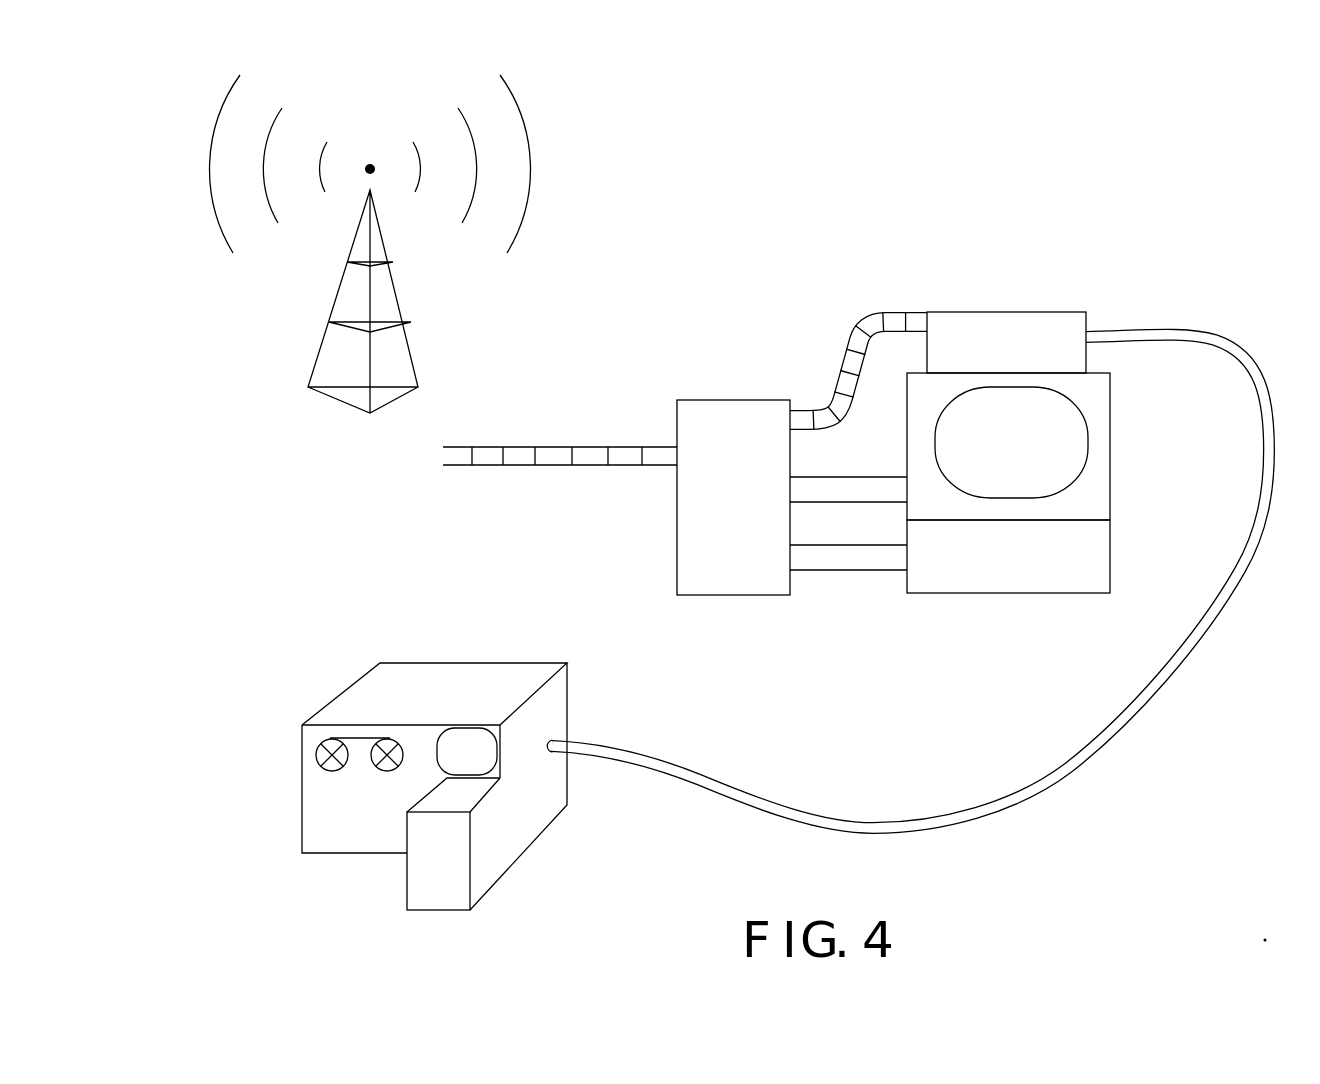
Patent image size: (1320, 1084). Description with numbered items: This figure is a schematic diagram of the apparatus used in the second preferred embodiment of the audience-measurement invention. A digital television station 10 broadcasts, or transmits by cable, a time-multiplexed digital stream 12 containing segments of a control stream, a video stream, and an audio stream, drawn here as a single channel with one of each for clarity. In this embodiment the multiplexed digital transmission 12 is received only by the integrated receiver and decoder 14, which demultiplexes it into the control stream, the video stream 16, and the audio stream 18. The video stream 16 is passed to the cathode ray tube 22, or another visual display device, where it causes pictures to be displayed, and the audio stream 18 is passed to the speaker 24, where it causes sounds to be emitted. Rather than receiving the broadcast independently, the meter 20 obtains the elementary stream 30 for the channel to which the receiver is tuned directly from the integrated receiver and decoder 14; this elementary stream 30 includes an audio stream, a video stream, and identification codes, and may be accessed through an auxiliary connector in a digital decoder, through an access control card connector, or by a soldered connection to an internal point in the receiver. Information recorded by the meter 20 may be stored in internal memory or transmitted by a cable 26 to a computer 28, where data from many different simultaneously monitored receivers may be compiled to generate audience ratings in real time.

The digital television station 10 is at (308, 358).
The time-multiplexed digital stream 12 is at (540, 447).
The integrated receiver and decoder 14 is at (678, 552).
The video stream 16 is at (862, 477).
The audio stream 18 is at (858, 572).
The meter 20 is at (1018, 312).
The cathode ray tube 22 is at (1110, 442).
The speaker 24 is at (988, 593).
The cable 26 is at (1118, 733).
The computer 28 is at (543, 825).
The elementary stream 30 is at (853, 343).